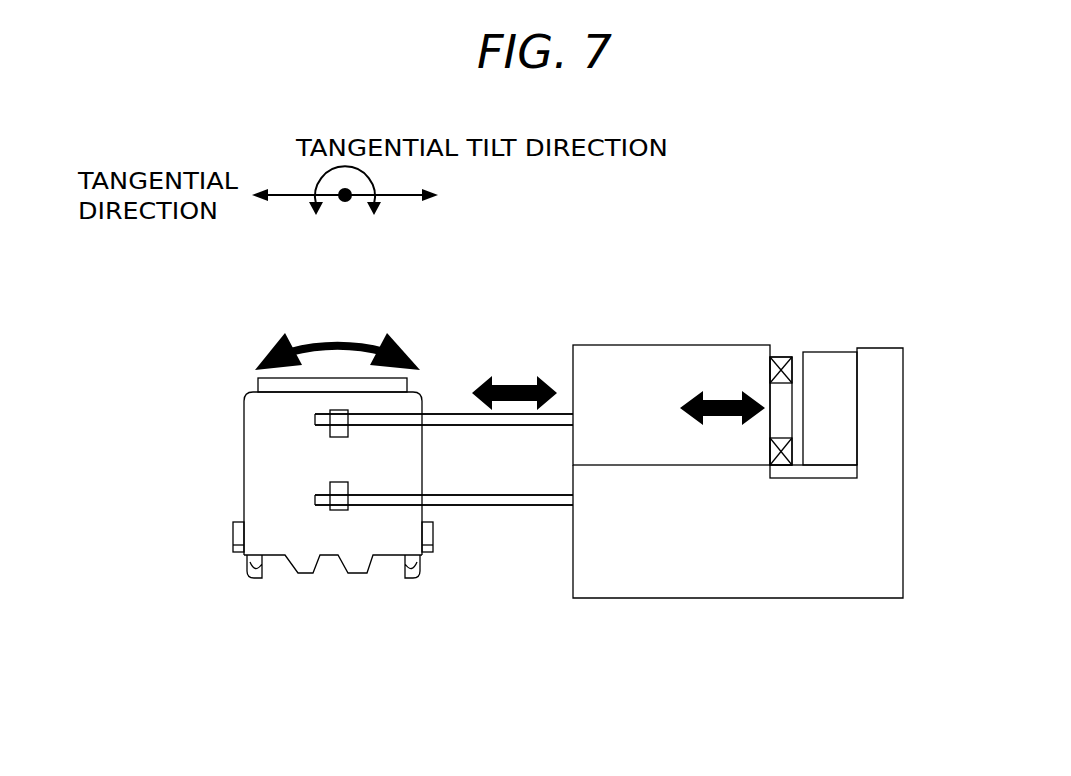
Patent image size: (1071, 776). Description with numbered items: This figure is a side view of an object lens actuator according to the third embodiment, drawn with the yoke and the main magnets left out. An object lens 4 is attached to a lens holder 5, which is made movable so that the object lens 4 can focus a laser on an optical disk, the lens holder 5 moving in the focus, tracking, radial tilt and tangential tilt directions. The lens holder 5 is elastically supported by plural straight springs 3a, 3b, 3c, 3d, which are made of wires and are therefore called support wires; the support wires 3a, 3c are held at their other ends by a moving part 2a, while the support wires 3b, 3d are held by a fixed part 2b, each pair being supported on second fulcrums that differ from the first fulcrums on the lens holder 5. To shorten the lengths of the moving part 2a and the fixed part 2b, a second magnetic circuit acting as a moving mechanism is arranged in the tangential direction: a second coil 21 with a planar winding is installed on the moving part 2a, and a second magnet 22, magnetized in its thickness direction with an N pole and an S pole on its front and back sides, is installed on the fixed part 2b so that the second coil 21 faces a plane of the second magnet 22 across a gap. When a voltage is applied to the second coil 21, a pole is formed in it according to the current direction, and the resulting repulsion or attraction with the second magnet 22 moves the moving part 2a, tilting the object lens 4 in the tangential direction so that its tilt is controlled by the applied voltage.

The moving part 2a is at (637, 367).
The fixed part 2b is at (653, 570).
The straight spring (support wire) 3a is at (456, 452).
The straight spring (support wire) 3b is at (468, 474).
The straight spring (support wire) 3c is at (444, 356).
The straight spring (support wire) 3d is at (444, 560).
The object lens 4 is at (321, 385).
The lens holder 5 is at (305, 556).
The second coil 21 is at (779, 358).
The second magnet 22 is at (840, 352).